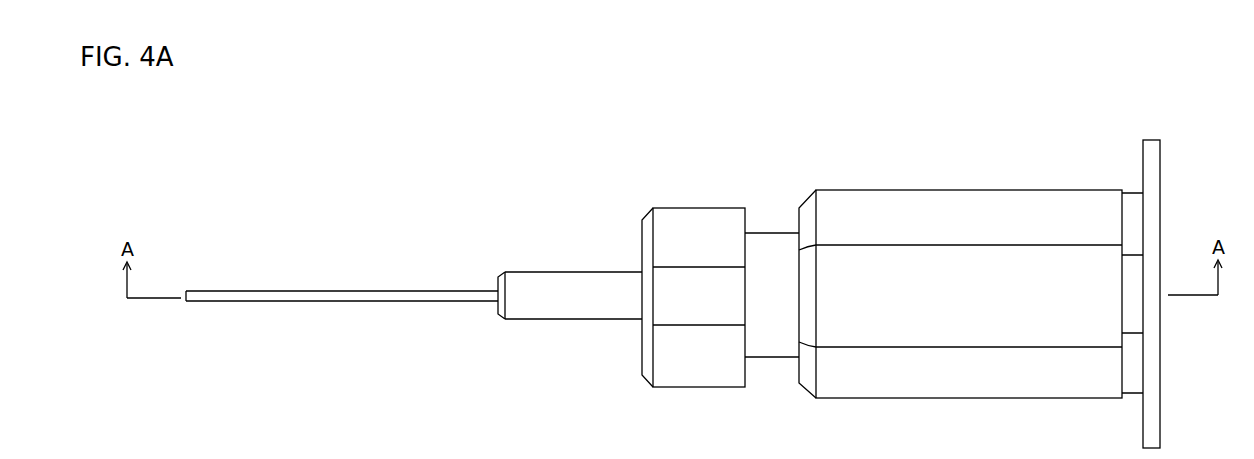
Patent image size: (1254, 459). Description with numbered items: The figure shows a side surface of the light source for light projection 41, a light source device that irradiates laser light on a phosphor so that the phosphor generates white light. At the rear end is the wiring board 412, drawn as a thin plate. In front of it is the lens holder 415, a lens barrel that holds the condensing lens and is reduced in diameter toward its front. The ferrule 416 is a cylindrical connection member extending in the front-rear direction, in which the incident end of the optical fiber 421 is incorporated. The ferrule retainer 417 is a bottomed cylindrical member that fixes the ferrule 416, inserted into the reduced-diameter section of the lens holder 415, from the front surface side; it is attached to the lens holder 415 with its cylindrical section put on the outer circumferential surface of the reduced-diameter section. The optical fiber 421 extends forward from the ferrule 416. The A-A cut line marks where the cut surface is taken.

The light source for light projection 41 is at (1036, 127).
The wiring board 412 is at (1160, 160).
The lens holder 415 is at (907, 189).
The ferrule 416 is at (555, 271).
The ferrule retainer 417 is at (716, 206).
The optical fiber 421 is at (362, 291).